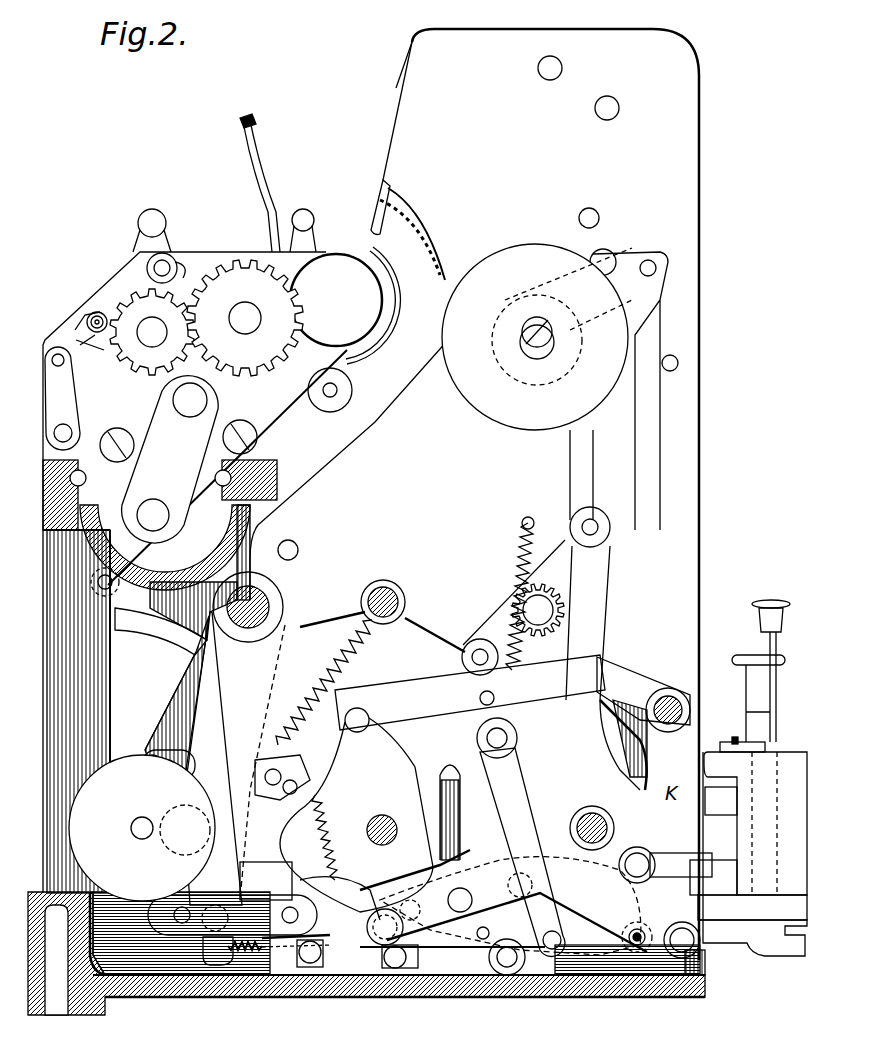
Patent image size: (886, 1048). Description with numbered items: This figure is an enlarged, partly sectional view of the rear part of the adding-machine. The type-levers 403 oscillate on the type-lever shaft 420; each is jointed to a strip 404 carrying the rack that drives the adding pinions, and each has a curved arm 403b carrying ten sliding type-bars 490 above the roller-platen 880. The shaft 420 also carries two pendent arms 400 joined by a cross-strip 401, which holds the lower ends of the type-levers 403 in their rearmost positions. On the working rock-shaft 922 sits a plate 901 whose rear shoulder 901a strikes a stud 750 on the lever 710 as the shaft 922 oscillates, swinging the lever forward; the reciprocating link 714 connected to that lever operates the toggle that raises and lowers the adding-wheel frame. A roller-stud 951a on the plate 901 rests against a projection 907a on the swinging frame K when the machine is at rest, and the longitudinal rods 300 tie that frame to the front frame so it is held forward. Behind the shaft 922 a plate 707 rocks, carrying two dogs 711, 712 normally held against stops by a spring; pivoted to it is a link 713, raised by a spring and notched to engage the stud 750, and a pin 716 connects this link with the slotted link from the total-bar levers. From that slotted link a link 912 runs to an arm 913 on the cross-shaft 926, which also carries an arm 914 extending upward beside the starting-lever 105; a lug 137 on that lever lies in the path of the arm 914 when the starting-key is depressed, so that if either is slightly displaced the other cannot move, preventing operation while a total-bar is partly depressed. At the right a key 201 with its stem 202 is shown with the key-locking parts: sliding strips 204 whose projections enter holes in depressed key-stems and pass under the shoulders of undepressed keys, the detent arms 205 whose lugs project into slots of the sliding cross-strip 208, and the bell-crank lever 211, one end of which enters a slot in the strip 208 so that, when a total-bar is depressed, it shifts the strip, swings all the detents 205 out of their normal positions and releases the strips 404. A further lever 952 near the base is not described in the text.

The curved arm 403b is at (373, 190).
The sliding type-bar 490 is at (440, 272).
The roller-platen 880 is at (376, 344).
The type-lever shaft 420 is at (262, 600).
The pendent arm 400 is at (234, 758).
The type-lever 403 is at (203, 707).
The dog 711 is at (184, 767).
The plate 707 is at (357, 810).
The link 713 is at (470, 684).
The pin 716 is at (497, 694).
The lever 710 is at (536, 565).
The stud 750 is at (592, 712).
The rear shoulder 901a is at (645, 707).
The working rock-shaft 922 is at (578, 812).
The link 912 is at (530, 837).
The plate 901 is at (517, 827).
The arm 913 is at (543, 980).
The cross-shaft 926 is at (507, 976).
The arm 914 is at (482, 940).
The lug 137 is at (480, 912).
The roller-stud 951a is at (638, 946).
The cross-strip 401 is at (232, 898).
The strip 404 is at (193, 923).
The starting-lever 105 is at (247, 940).
The dog 712 is at (323, 935).
The lever 952 is at (370, 927).
The projection 907a is at (698, 967).
The longitudinal rod 300 is at (777, 940).
The key 201 is at (782, 593).
The key stem 202 is at (770, 645).
The sliding cross-strip 208 is at (722, 742).
The arm 205 is at (735, 820).
The bell-crank lever 211 is at (722, 810).
The reciprocating link 714 is at (712, 857).
The sliding strip 204 is at (722, 875).